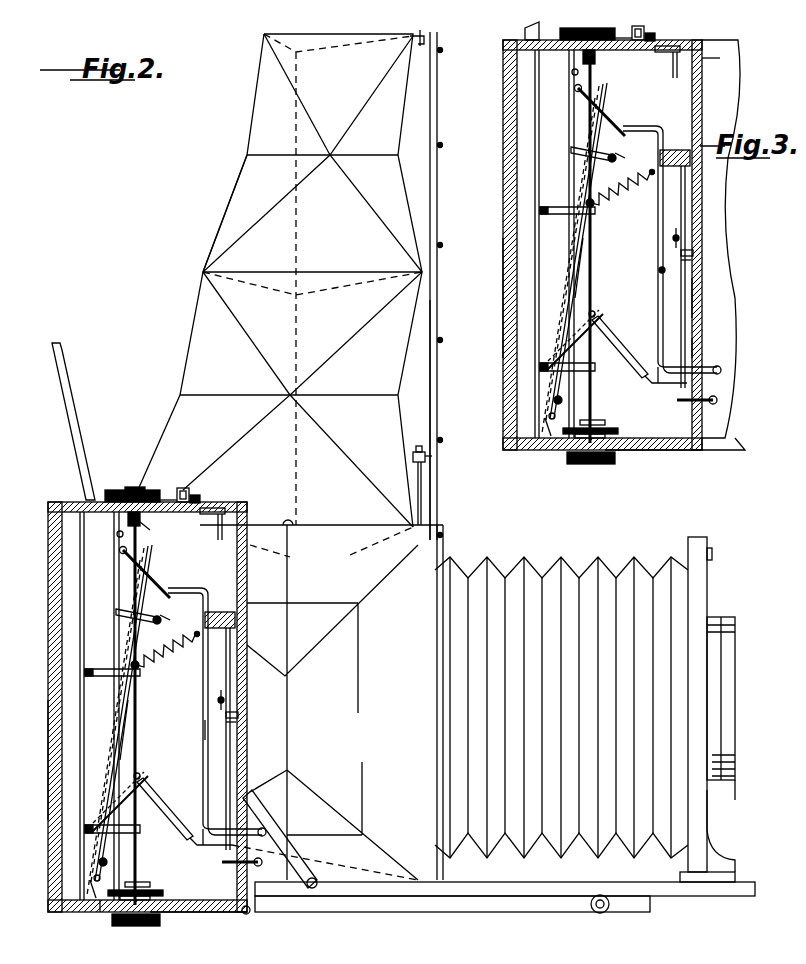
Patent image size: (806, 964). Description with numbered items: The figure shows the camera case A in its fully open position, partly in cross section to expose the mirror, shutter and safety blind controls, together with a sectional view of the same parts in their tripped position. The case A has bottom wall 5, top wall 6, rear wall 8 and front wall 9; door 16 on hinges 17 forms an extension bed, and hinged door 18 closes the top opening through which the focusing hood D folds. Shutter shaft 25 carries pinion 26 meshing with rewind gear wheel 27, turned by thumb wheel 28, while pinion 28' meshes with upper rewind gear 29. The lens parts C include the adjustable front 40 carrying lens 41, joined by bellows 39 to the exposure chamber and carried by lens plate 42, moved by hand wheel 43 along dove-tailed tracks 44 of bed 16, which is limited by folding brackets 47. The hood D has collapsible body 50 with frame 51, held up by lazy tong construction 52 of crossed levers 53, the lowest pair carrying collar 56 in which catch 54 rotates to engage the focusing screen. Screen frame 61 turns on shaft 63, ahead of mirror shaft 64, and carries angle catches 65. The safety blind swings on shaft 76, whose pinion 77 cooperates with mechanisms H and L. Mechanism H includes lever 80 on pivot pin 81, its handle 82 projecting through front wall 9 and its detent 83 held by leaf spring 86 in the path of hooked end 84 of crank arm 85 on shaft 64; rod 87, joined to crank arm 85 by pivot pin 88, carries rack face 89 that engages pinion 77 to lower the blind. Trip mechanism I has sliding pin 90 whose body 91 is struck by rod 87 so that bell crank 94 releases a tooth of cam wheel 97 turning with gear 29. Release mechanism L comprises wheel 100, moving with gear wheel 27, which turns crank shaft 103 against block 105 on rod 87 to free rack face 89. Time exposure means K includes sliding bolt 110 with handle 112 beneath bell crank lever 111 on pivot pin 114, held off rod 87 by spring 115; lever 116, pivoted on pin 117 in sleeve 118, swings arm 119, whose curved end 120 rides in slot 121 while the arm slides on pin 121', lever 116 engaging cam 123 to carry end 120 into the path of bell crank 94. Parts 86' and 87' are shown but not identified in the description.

In FIG. 2, the bottom wall 5 is at (178, 912).
In FIG. 3, the bottom wall 5 is at (653, 459).
In FIG. 2, the top wall 6 is at (58, 502).
In FIG. 3, the top wall 6 is at (621, 234).
In FIG. 2, the rear wall 8 is at (48, 800).
In FIG. 3, the rear wall 8 is at (493, 298).
In FIG. 3, the front wall 9 is at (719, 298).
In FIG. 2, the door 16 is at (355, 896).
In FIG. 2, the hinges 17 is at (247, 912).
In FIG. 2, the hinged door 18 is at (72, 406).
In FIG. 3, the hinged door 18 is at (534, 25).
In FIG. 2, the shaft 25 is at (113, 606).
In FIG. 3, the shaft 25 is at (562, 244).
In FIG. 2, the pinion 26 is at (92, 904).
In FIG. 2, the gear wheel 27 is at (200, 890).
In FIG. 3, the gear wheel 27 is at (621, 246).
In FIG. 2, the thumb wheel 28 is at (136, 928).
In FIG. 3, the thumb wheel 28 is at (594, 467).
In FIG. 2, the pinion 28' is at (130, 486).
In FIG. 3, the upper rewind gear 29 is at (587, 23).
In FIG. 2, the bellows 39 is at (530, 563).
In FIG. 2, the adjustable front 40 is at (707, 800).
In FIG. 2, the lens proper 41 is at (735, 748).
In FIG. 2, the lens plate 42 is at (735, 876).
In FIG. 2, the hand wheel 43 is at (605, 910).
In FIG. 2, the dove tailed tracks 44 is at (522, 896).
In FIG. 2, the folding brackets 47 is at (290, 858).
In FIG. 2, the collapsible body 50 is at (196, 305).
In FIG. 2, the frame 51 is at (417, 34).
In FIG. 2, the lazy tong construction 52 is at (440, 210).
In FIG. 2, the crossed levers 53 is at (437, 358).
In FIG. 2, the catch 54 is at (422, 500).
In FIG. 2, the collar 56 is at (413, 458).
In FIG. 3, the frame 61 is at (654, 271).
In FIG. 2, the shaft 63 is at (116, 535).
In FIG. 2, the shaft 64 is at (118, 552).
In FIG. 3, the shaft 64 is at (600, 111).
In FIG. 3, the angle catches 65 is at (584, 77).
In FIG. 2, the shaft 76 is at (108, 862).
In FIG. 3, the shaft 76 is at (558, 394).
In FIG. 2, the pinion 77 is at (100, 878).
In FIG. 3, the pinion 77 is at (555, 424).
In FIG. 2, the lever 80 is at (203, 665).
In FIG. 3, the lever 80 is at (682, 260).
In FIG. 2, the pivot pin 81 is at (203, 722).
In FIG. 2, the handle 82 is at (262, 826).
In FIG. 3, the handle 82 is at (740, 362).
In FIG. 2, the detent 83 is at (192, 588).
In FIG. 3, the detent 83 is at (643, 138).
In FIG. 2, the hooked end 84 is at (165, 602).
In FIG. 3, the hooked end 84 is at (647, 120).
In FIG. 2, the crank arm 85 is at (148, 580).
In FIG. 3, the crank arm 85 is at (590, 251).
In FIG. 2, the leaf spring 86 is at (187, 632).
In FIG. 3, the leaf spring 86 is at (660, 232).
In FIG. 3, the lever 86' is at (599, 149).
In FIG. 2, the rod 87 is at (113, 649).
In FIG. 3, the rod 87 is at (582, 190).
In FIG. 2, the spring 87' is at (168, 648).
In FIG. 3, the spring 87' is at (623, 194).
In FIG. 2, the pivot pin 88 is at (145, 613).
In FIG. 2, the rack face 89 is at (92, 893).
In FIG. 3, the rack face 89 is at (572, 412).
In FIG. 2, the sliding pin 90 is at (142, 530).
In FIG. 3, the sliding pin 90 is at (593, 59).
In FIG. 2, the body 91 is at (150, 536).
In FIG. 2, the bell crank 94 is at (172, 496).
In FIG. 3, the bell crank 94 is at (656, 23).
In FIG. 2, the cam wheel 97 is at (140, 494).
In FIG. 2, the wheel 100 is at (150, 884).
In FIG. 3, the wheel 100 is at (610, 415).
In FIG. 2, the crank shaft 103 is at (134, 706).
In FIG. 3, the crank shaft 103 is at (606, 262).
In FIG. 2, the block 105 is at (118, 706).
In FIG. 3, the block 105 is at (588, 265).
In FIG. 2, the sliding bolt 110 is at (205, 860).
In FIG. 3, the sliding bolt 110 is at (676, 396).
In FIG. 2, the bell crank lever 111 is at (165, 806).
In FIG. 3, the bell crank lever 111 is at (639, 349).
In FIG. 2, the handle 112 is at (250, 866).
In FIG. 3, the handle 112 is at (727, 406).
In FIG. 2, the pivot pin 114 is at (152, 780).
In FIG. 3, the pivot pin 114 is at (603, 336).
In FIG. 2, the spring 115 is at (140, 772).
In FIG. 3, the spring 115 is at (609, 309).
In FIG. 2, the lever 116 is at (232, 762).
In FIG. 3, the lever 116 is at (728, 277).
In FIG. 2, the pivot pin 117 is at (238, 712).
In FIG. 3, the pivot pin 117 is at (729, 242).
In FIG. 2, the sleeve 118 is at (238, 722).
In FIG. 3, the sleeve 118 is at (729, 235).
In FIG. 2, the arm 119 is at (216, 530).
In FIG. 3, the arm 119 is at (688, 51).
In FIG. 2, the curved end 120 is at (200, 500).
In FIG. 3, the curved end 120 is at (650, 56).
In FIG. 3, the slot 121 is at (652, 57).
In FIG. 2, the pin 121' is at (241, 497).
In FIG. 2, the cam 123 is at (238, 622).
In FIG. 3, the cam 123 is at (714, 167).
In FIG. 2, the case A is at (248, 526).
In FIG. 3, the case A is at (726, 40).
In FIG. 2, the lens and associate parts C is at (705, 600).
In FIG. 2, the focusing hood D is at (224, 218).
In FIG. 2, the operating means H is at (262, 650).
In FIG. 3, the operating means H is at (607, 162).
In FIG. 2, the shutter trip mechanism I is at (185, 480).
In FIG. 3, the shutter trip mechanism I is at (626, 19).
In FIG. 3, the time exposure operating mechanism K is at (722, 335).
In FIG. 2, the release mechanism L is at (159, 886).
In FIG. 3, the release mechanism L is at (606, 428).